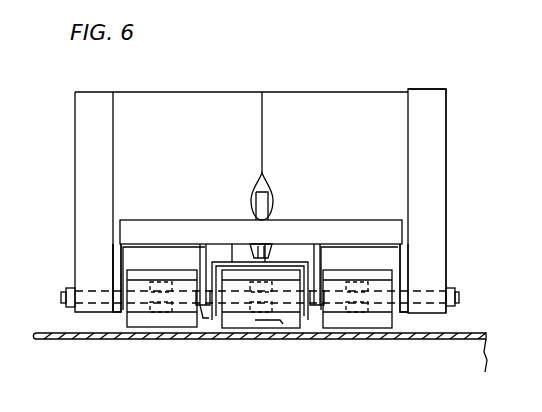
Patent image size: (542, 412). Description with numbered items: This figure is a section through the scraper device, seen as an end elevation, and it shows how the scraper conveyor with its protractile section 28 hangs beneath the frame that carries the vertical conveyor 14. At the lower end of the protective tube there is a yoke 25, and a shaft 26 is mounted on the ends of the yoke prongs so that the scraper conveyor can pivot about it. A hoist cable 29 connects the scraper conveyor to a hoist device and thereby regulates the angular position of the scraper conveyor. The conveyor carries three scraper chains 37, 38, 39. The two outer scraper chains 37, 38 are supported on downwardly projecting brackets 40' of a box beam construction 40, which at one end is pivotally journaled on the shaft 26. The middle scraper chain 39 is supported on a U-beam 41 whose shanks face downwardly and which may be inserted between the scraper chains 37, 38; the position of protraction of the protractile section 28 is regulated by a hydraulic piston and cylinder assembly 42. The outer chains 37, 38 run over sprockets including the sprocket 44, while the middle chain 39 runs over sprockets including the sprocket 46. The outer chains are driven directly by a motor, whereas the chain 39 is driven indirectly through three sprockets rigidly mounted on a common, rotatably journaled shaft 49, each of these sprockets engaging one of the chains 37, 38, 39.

The vertical conveyor 14 is at (170, 101).
The yoke 25 is at (440, 216).
The shaft 26 is at (430, 292).
The protractile section 28 is at (145, 318).
The hoist cable 29 is at (260, 152).
The scraper chain 37 is at (347, 333).
The scraper chain 38 is at (187, 325).
The scraper chain 39 is at (242, 320).
The box beam construction 40 is at (261, 217).
The downwardly projecting brackets 40' is at (258, 268).
The U-beam 41 is at (232, 246).
The hydraulic piston and cylinder assembly 42 is at (272, 246).
The sprocket 44 is at (155, 287).
The sprocket 46 is at (278, 322).
The shaft 49 is at (313, 247).